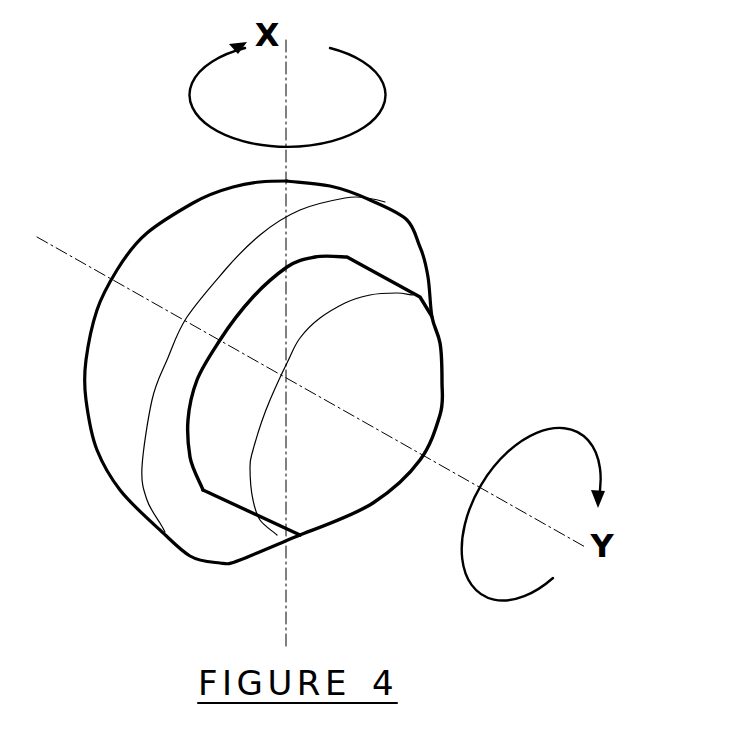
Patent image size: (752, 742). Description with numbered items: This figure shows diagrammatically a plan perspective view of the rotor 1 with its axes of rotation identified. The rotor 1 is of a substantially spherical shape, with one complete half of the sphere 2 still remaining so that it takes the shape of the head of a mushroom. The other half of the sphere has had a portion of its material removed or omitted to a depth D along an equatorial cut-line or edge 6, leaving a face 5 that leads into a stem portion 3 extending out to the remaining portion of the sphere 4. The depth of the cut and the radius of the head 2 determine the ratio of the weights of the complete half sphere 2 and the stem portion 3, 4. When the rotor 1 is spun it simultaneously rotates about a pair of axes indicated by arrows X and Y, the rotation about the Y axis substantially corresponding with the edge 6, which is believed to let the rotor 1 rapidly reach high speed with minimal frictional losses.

The rotor 1 is at (317, 290).
The complete half of the sphere 2 is at (165, 282).
The stem portion 3 is at (243, 412).
The remaining portion of the sphere 4 is at (438, 383).
The face 5 is at (410, 262).
The equatorial cut-line or edge 6 is at (413, 222).